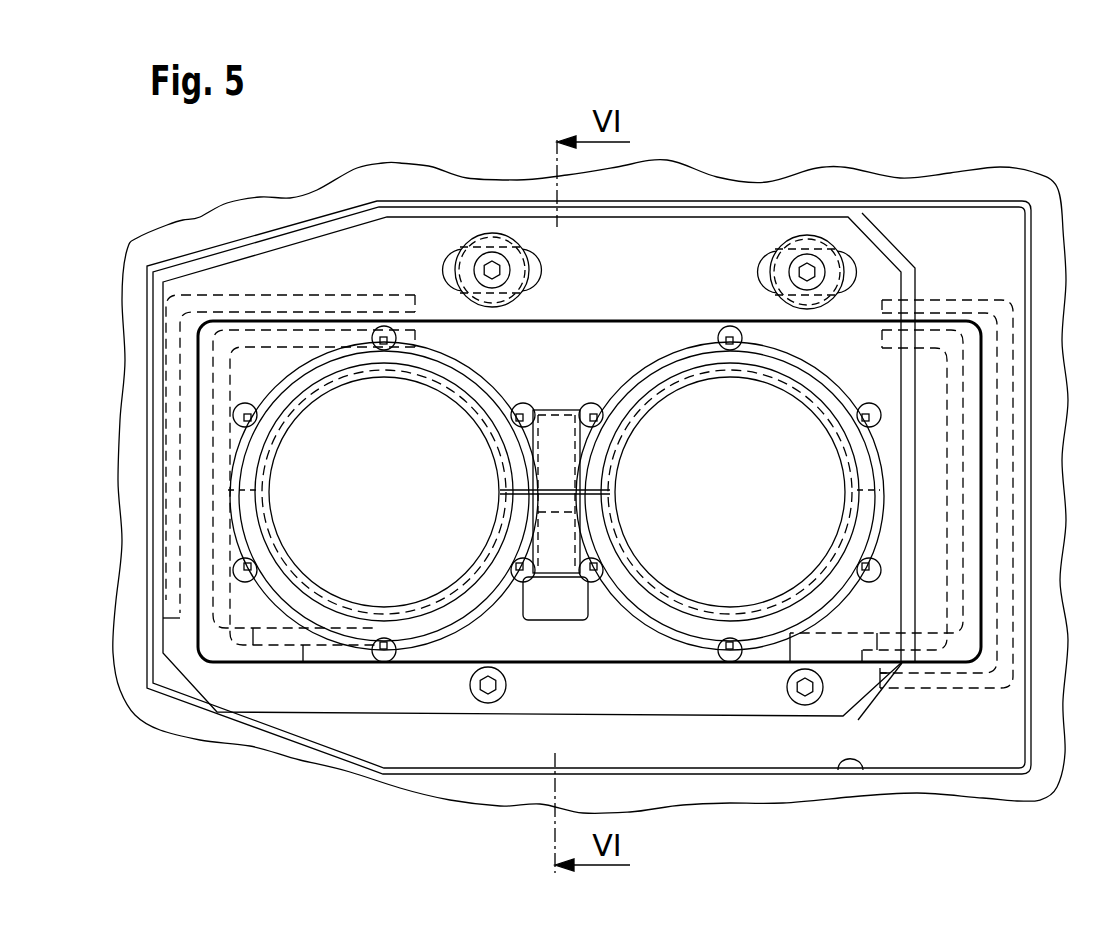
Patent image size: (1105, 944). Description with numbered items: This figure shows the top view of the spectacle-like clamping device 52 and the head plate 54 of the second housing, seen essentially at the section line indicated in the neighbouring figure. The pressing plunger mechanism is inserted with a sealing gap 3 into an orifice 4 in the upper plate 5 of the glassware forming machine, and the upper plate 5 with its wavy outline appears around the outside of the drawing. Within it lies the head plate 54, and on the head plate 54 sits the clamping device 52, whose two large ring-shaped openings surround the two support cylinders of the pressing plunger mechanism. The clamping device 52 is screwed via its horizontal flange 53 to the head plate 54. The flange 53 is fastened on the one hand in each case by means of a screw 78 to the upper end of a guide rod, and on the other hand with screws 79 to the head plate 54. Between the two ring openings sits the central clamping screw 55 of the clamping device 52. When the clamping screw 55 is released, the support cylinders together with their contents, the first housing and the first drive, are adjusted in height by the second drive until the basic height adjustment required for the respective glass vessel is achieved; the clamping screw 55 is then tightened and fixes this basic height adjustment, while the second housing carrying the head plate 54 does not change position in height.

The sealing gap 3 is at (1030, 213).
The orifice 4 is at (857, 770).
The upper plate 5 is at (1040, 783).
The clamping device 52 is at (731, 212).
The horizontal flange 53 is at (653, 250).
The head plate 54 is at (903, 232).
The central clamping screw 55 is at (563, 607).
The screw 78 is at (493, 270).
The screws 79 is at (477, 698).